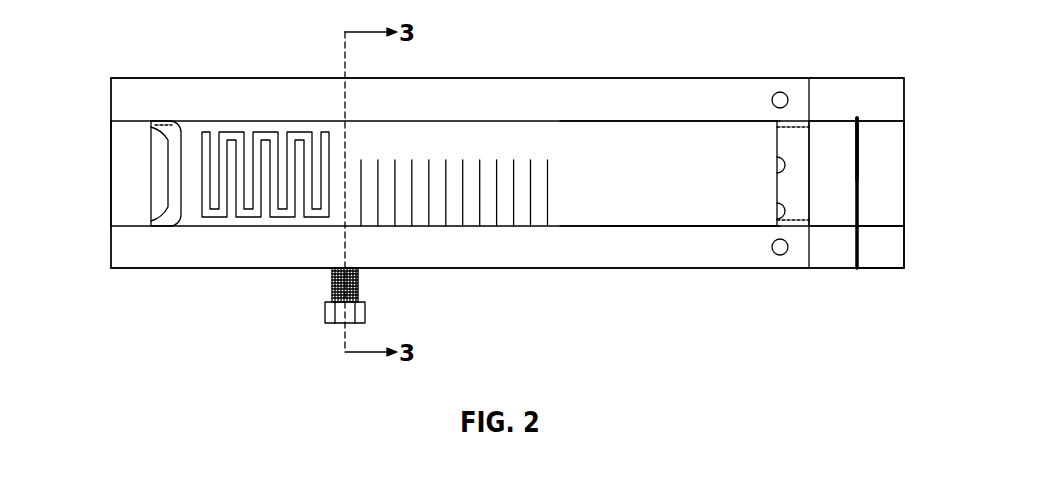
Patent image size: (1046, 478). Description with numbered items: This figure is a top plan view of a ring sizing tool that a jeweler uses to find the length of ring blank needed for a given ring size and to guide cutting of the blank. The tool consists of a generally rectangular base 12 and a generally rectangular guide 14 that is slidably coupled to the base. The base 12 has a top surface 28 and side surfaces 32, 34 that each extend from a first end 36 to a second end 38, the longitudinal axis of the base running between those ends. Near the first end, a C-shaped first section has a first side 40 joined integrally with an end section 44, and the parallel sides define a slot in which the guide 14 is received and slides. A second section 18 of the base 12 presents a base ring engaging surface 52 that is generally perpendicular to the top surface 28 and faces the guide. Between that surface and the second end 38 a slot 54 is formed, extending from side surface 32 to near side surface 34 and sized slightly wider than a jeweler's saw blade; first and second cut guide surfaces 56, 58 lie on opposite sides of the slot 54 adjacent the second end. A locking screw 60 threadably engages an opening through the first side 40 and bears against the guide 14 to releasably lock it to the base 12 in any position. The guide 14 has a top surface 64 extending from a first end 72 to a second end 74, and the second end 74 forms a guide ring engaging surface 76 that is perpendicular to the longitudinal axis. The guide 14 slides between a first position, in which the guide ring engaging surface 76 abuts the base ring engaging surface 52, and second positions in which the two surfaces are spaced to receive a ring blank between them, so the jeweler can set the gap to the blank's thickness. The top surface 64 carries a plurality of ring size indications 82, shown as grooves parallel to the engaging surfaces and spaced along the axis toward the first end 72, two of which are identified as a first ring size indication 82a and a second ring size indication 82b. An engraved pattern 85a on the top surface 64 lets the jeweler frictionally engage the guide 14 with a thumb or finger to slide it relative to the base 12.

The base 12 is at (707, 87).
The guide 14 is at (565, 147).
The second section 18 is at (893, 160).
The top surface 28 is at (438, 95).
The side surface 32 is at (547, 270).
The side surface 34 is at (243, 78).
The first end 36 is at (110, 99).
The second end 38 is at (907, 98).
The first side 40 is at (427, 255).
The end section 44 is at (123, 209).
The base ring engaging surface 52 is at (807, 137).
The slot 54 is at (860, 135).
The first cut guide surface 56 is at (857, 247).
The second cut guide surface 58 is at (859, 247).
The locking screw 60 is at (325, 312).
The top surface 64 is at (693, 203).
The first end 72 is at (153, 128).
The second end 74 is at (779, 255).
The guide ring engaging surface 76 is at (777, 160).
The ring size indications 82 is at (501, 126).
The first ring size indication 82a is at (410, 198).
The second ring size indication 82b is at (480, 198).
The engraved pattern 85a is at (278, 140).